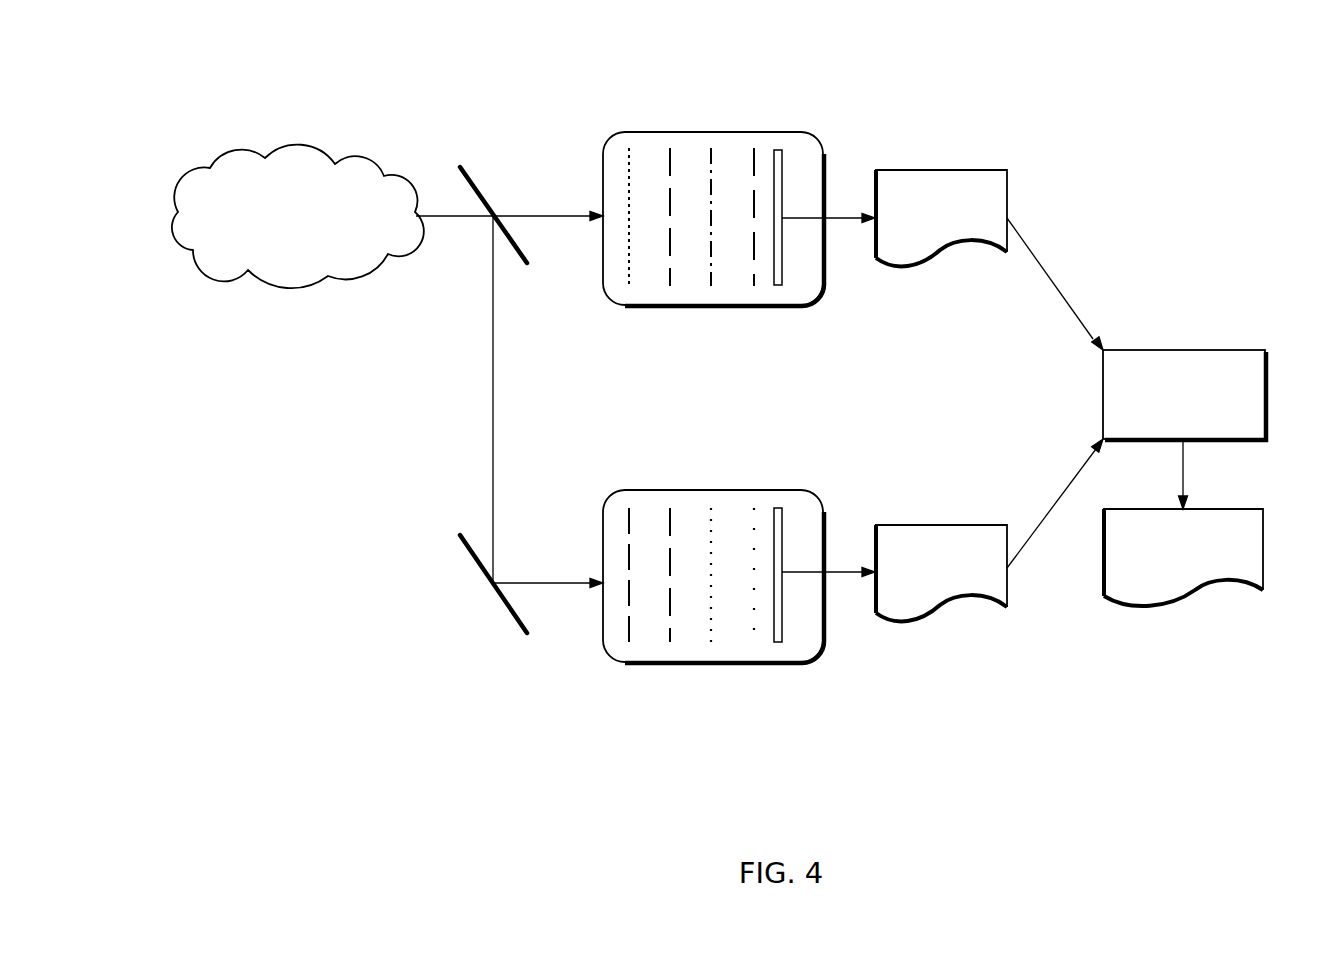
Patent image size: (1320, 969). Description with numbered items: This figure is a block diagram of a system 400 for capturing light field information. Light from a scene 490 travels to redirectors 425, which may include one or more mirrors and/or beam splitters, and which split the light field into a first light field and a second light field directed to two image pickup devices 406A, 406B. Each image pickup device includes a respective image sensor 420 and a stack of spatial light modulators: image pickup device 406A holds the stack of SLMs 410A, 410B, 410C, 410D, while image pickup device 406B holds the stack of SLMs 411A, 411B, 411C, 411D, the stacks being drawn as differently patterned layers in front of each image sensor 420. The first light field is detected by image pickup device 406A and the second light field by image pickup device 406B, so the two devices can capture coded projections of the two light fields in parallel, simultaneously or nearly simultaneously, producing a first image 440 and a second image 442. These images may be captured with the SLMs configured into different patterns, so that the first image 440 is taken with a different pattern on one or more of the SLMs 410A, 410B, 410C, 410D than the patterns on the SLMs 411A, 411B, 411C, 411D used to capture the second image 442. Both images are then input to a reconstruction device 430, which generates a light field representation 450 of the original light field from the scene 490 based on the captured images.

The system 400 is at (447, 63).
The scene 490 is at (297, 145).
The redirectors 425 is at (516, 252).
The image pickup device 406A is at (720, 217).
The image pickup device 406B is at (720, 575).
The SLM 410A is at (629, 286).
The SLM 410B is at (670, 148).
The SLM 410C is at (711, 286).
The SLM 410D is at (754, 148).
The SLM 411A is at (629, 645).
The SLM 411B is at (670, 506).
The SLM 411C is at (711, 645).
The SLM 411D is at (754, 506).
The image sensor 420 is at (778, 286).
The image 1 440 is at (942, 170).
The image 2 442 is at (943, 612).
The reconstruction device 430 is at (1183, 350).
The light field representation 450 is at (1188, 597).